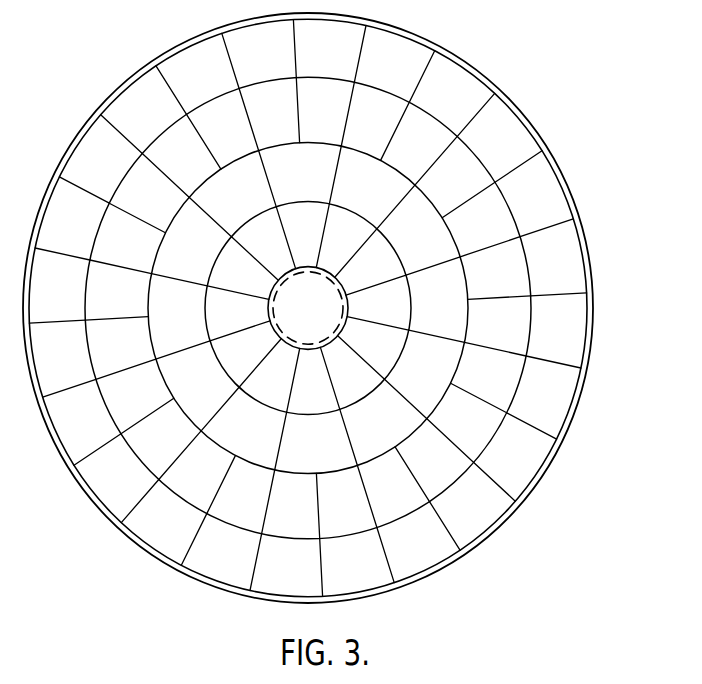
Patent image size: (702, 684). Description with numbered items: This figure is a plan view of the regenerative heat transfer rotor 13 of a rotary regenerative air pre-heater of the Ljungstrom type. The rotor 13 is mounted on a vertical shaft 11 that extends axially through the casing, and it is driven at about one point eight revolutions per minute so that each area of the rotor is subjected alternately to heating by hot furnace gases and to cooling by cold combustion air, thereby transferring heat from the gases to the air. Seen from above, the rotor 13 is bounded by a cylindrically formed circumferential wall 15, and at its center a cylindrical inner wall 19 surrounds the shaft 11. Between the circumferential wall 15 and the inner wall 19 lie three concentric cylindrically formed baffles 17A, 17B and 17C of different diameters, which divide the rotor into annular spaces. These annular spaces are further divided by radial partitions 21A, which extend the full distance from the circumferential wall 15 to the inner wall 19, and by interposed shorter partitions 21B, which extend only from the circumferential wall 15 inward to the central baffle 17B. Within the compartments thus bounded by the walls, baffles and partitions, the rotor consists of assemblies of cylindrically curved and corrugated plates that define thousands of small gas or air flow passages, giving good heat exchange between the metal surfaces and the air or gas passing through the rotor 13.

The vertical shaft 11 is at (278, 292).
The regenerative heat transfer rotor 13 is at (568, 260).
The circumferential wall 15 is at (523, 107).
The baffle 17A is at (505, 193).
The central baffle 17B is at (468, 273).
The baffle 17C is at (408, 305).
The cylindrical inner wall 19 is at (347, 327).
The radial partition 21A is at (380, 223).
The shorter partition 21B is at (427, 68).